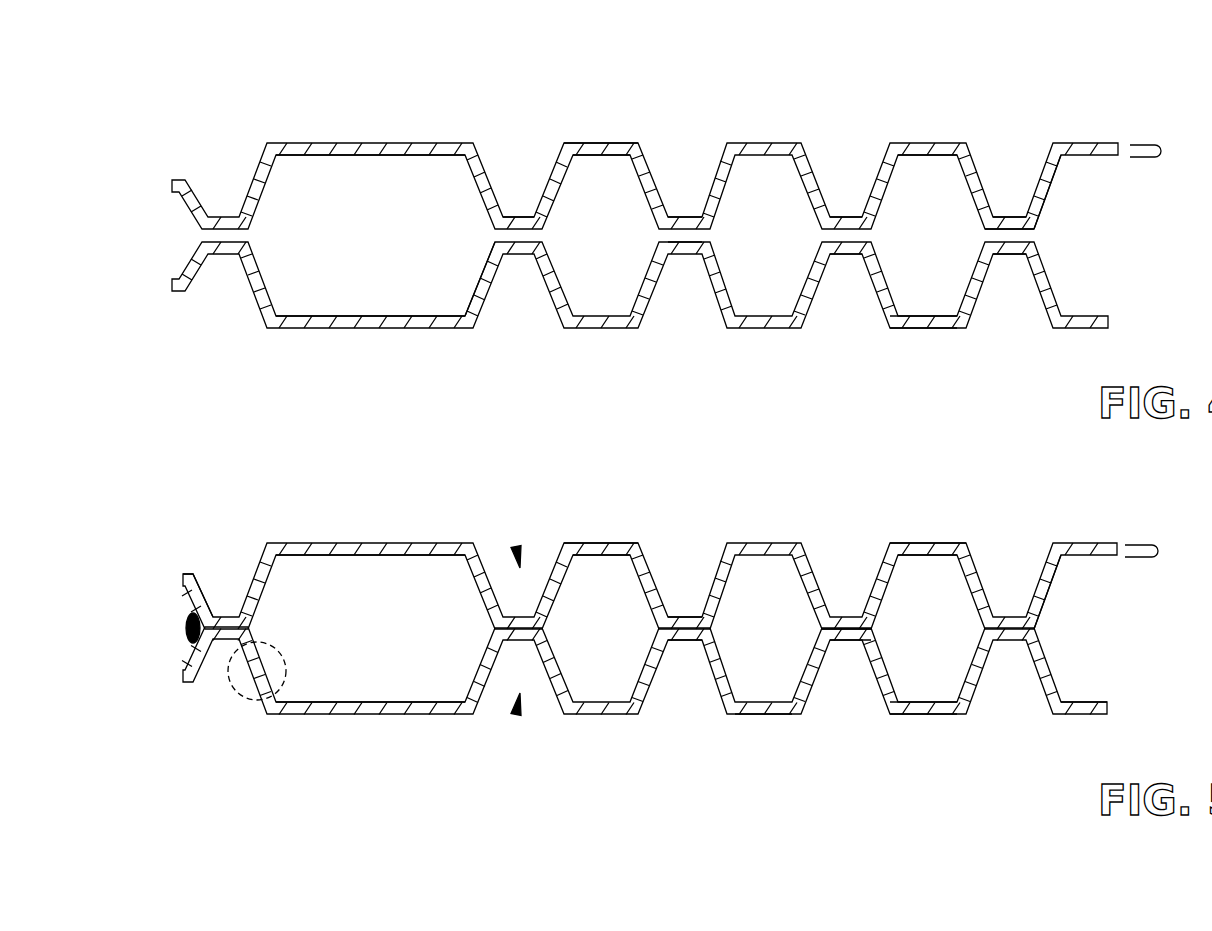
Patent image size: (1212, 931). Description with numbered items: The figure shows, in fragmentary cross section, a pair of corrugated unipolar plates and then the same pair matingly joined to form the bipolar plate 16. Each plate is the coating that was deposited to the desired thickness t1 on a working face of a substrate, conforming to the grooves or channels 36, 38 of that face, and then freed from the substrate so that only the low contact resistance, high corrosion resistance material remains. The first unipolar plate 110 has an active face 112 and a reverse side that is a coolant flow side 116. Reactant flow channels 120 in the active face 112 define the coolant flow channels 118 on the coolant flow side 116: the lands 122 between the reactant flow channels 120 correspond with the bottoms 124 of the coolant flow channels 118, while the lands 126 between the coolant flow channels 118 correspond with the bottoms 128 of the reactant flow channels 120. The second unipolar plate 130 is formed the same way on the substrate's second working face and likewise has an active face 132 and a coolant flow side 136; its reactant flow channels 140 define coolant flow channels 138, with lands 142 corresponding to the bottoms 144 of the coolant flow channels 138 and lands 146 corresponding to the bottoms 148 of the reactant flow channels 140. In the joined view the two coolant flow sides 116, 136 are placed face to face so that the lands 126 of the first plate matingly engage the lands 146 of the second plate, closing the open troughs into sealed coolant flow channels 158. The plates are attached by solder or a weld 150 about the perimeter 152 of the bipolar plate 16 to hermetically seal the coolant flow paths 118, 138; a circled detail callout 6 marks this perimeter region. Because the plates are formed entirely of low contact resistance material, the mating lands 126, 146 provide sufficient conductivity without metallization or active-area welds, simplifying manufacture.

In FIG. 5, the bipolar plate 16 is at (244, 486).
In FIG. 4, the unipolar plate 110 is at (372, 120).
In FIG. 5, the unipolar plate 110 is at (340, 522).
In FIG. 4, the active face 112 is at (730, 143).
In FIG. 4, the coolant flow side 116 is at (1050, 186).
In FIG. 5, the coolant flow side 116 is at (1050, 586).
In FIG. 4, the coolant flow channels 118 is at (349, 194).
In FIG. 5, the coolant flow channels 118 is at (362, 589).
In FIG. 4, the reactant flow channels 120 is at (497, 177).
In FIG. 4, the lands 122 is at (602, 143).
In FIG. 5, the lands 122 is at (603, 543).
In FIG. 4, the bottoms of the coolant flow channels 124 is at (600, 156).
In FIG. 5, the bottoms of the coolant flow channels 124 is at (929, 556).
In FIG. 4, the lands 126 is at (1005, 237).
In FIG. 5, the lands 126 is at (813, 628).
In FIG. 4, the bottoms of the reactant flow channels 128 is at (840, 217).
In FIG. 5, the bottoms of the reactant flow channels 128 is at (687, 617).
In FIG. 4, the second unipolar plate 130 is at (1083, 330).
In FIG. 5, the second unipolar plate 130 is at (308, 750).
In FIG. 4, the active face 132 is at (775, 329).
In FIG. 5, the active face 132 is at (773, 715).
In FIG. 4, the coolant flow side 136 is at (472, 291).
In FIG. 5, the coolant flow side 136 is at (1092, 703).
In FIG. 4, the coolant flow channels 138 is at (349, 305).
In FIG. 5, the coolant flow channels 138 is at (362, 689).
In FIG. 4, the reactant flow channels 140 is at (819, 312).
In FIG. 4, the lands 142 is at (932, 329).
In FIG. 5, the lands 142 is at (930, 715).
In FIG. 4, the bottoms of the coolant flow channels 144 is at (928, 316).
In FIG. 5, the bottoms of the coolant flow channels 144 is at (929, 701).
In FIG. 4, the lands 146 is at (692, 241).
In FIG. 5, the lands 146 is at (868, 640).
In FIG. 4, the bottoms of the reactant flow channels 148 is at (1012, 256).
In FIG. 5, the bottoms of the reactant flow channels 148 is at (687, 640).
In FIG. 5, the weld 150 is at (185, 634).
In FIG. 5, the perimeter 152 is at (183, 600).
In FIG. 5, the coolant flow channels 158 is at (579, 639).
In FIG. 5, the grooves or channels 36 is at (516, 547).
In FIG. 5, the grooves or channels 38 is at (516, 715).
In FIG. 5, the detail view circle 6 is at (237, 696).
In FIG. 4, the thickness t1 is at (1161, 151).
In FIG. 5, the thickness t1 is at (1158, 551).